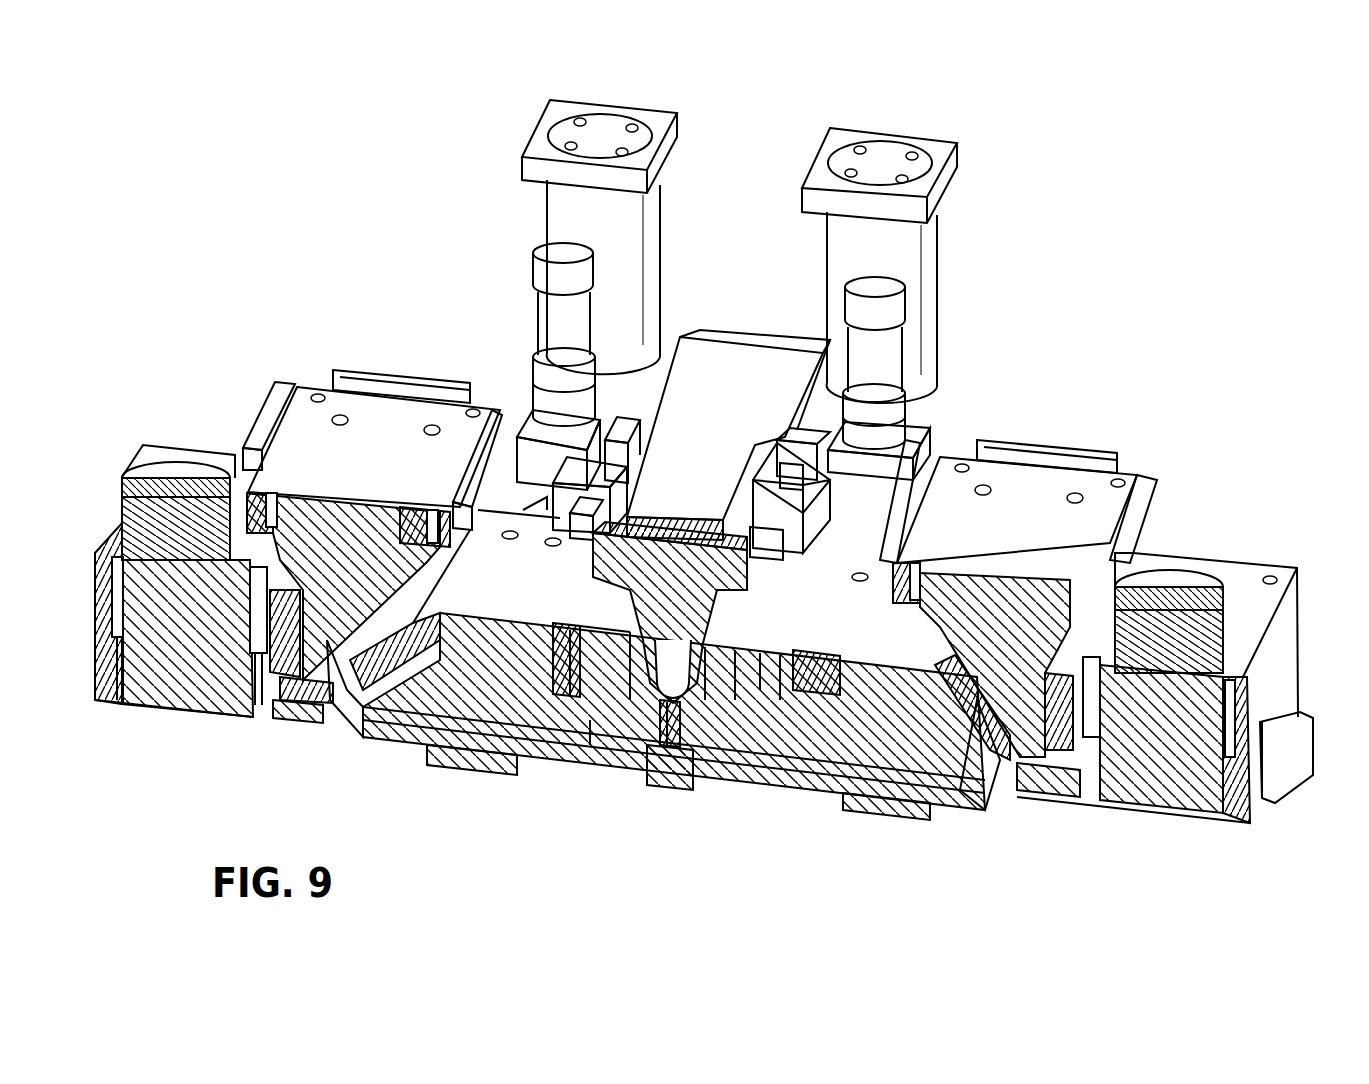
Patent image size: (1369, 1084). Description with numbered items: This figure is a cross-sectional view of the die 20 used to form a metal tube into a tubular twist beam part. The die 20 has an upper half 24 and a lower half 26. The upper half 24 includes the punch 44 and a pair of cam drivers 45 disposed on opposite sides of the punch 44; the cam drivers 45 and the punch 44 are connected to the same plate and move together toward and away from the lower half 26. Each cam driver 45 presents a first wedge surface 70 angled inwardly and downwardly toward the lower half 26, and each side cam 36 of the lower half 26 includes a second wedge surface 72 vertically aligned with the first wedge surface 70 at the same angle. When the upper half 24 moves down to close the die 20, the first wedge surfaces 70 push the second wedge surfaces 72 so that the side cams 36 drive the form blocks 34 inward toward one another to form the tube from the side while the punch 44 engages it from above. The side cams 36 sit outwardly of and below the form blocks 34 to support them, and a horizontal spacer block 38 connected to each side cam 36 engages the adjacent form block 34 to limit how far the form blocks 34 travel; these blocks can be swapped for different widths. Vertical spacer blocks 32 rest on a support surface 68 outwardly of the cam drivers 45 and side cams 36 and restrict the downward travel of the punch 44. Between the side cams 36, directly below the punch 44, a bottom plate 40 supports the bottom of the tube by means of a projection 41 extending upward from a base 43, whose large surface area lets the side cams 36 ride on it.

The die 20 is at (701, 483).
The upper half 24 is at (747, 333).
The lower half 26 is at (558, 777).
The vertical spacer block 32 is at (190, 520).
The form block 34 is at (640, 702).
The side cam 36 is at (340, 723).
The horizontal spacer block 38 is at (570, 630).
The bottom plate 40 is at (673, 802).
The projection 41 is at (697, 778).
The base 43 is at (688, 790).
The punch 44 is at (665, 547).
The cam driver 45 is at (355, 494).
The support surface 68 is at (118, 540).
The first wedge surface 70 is at (357, 712).
The second wedge surface 72 is at (927, 693).